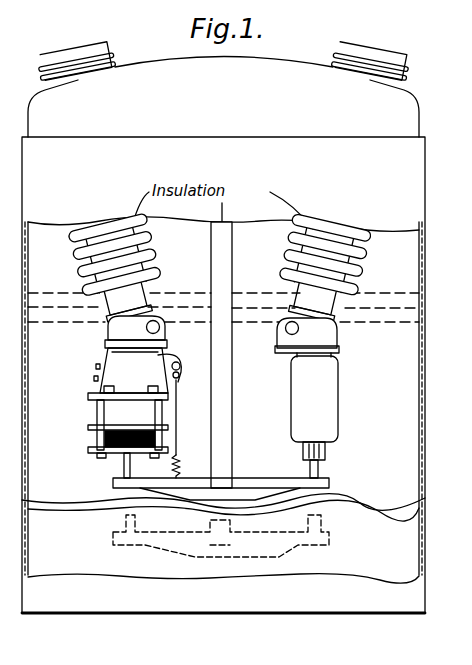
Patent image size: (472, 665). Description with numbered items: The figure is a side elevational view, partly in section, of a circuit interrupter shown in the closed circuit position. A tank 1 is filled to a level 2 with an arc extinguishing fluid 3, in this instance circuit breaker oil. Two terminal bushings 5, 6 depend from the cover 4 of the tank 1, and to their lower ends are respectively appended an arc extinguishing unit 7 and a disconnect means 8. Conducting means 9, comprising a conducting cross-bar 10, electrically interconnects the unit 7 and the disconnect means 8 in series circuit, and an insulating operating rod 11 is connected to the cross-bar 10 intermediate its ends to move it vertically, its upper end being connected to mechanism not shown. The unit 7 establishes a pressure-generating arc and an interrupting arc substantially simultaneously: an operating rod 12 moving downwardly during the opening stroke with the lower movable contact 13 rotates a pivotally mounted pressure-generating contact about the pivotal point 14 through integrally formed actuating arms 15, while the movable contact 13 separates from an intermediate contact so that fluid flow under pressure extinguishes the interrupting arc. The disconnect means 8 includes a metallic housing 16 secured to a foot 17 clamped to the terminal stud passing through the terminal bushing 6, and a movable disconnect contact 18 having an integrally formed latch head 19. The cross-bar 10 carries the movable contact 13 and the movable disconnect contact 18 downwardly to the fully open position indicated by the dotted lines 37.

The tank 1 is at (425, 413).
The level 2 is at (405, 293).
The arc extinguishing fluid 3 is at (403, 323).
The cover 4 is at (290, 61).
The terminal bushing 5 is at (157, 262).
The terminal bushing 6 is at (368, 272).
The arc extinguishing unit 7 is at (78, 428).
The disconnect means 8 is at (362, 419).
The conducting means 9 is at (255, 461).
The conducting cross-bar 10 is at (257, 479).
The insulating operating rod 11 is at (233, 358).
The operating rod 12 is at (178, 432).
The lower movable contact 13 is at (123, 466).
The pivotal point 14 is at (160, 375).
The actuating arms 15 is at (180, 375).
The metallic housing 16 is at (291, 398).
The foot 17 is at (340, 349).
The movable disconnect contact 18 is at (319, 473).
The latch head 19 is at (322, 459).
The dotted lines 37 is at (282, 557).